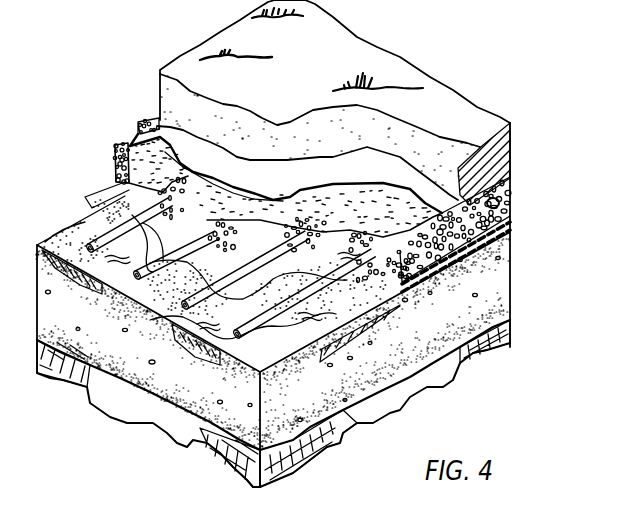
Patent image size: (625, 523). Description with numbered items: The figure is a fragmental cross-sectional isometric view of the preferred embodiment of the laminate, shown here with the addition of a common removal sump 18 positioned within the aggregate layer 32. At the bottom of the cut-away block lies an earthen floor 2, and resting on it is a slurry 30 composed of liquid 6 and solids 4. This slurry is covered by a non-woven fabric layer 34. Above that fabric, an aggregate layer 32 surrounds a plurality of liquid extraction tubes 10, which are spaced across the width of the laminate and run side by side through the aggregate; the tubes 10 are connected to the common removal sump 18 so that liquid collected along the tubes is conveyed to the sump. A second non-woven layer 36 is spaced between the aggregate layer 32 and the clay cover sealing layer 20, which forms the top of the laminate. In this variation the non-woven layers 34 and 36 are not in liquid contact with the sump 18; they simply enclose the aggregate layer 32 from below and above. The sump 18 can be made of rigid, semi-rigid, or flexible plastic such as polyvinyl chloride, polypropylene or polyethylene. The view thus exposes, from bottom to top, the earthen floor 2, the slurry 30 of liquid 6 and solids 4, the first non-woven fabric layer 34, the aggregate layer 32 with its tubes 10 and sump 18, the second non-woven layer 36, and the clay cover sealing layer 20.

The earthen floor 2 is at (212, 447).
The solids 4 is at (348, 397).
The liquid 6 is at (178, 348).
The liquid extraction tubes 10 is at (107, 221).
The common removal sump 18 is at (511, 190).
The clay cover sealing layer 20 is at (297, 89).
The slurry 30 is at (546, 247).
The aggregate layer 32 is at (118, 158).
The non-woven fabric layer 34 is at (510, 228).
The second non-woven layer 36 is at (511, 156).